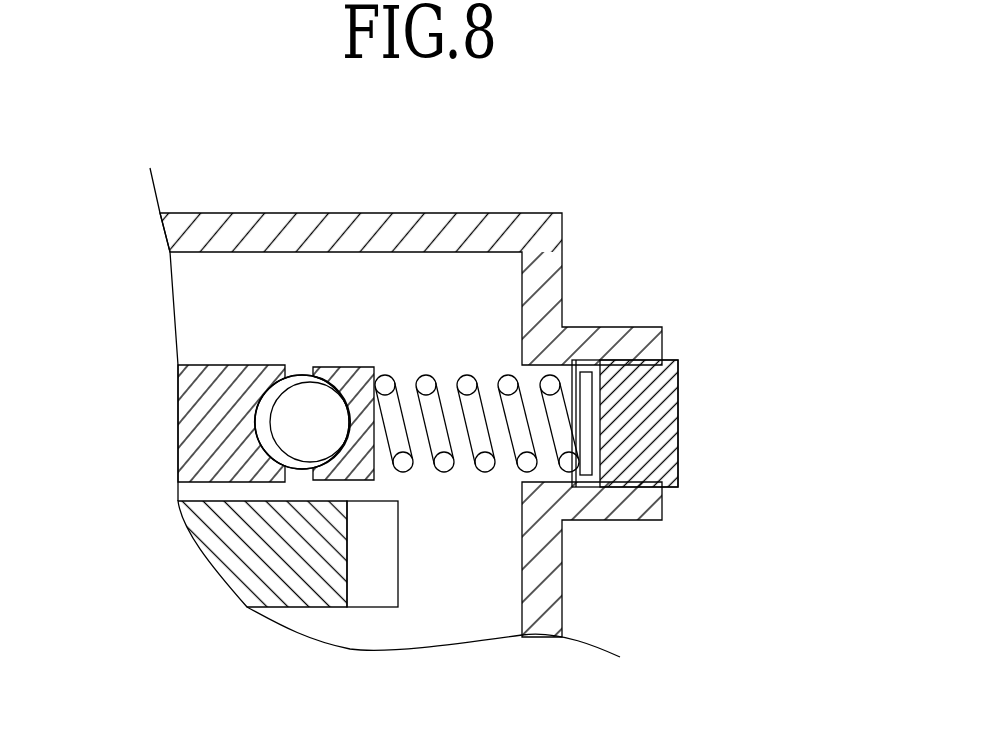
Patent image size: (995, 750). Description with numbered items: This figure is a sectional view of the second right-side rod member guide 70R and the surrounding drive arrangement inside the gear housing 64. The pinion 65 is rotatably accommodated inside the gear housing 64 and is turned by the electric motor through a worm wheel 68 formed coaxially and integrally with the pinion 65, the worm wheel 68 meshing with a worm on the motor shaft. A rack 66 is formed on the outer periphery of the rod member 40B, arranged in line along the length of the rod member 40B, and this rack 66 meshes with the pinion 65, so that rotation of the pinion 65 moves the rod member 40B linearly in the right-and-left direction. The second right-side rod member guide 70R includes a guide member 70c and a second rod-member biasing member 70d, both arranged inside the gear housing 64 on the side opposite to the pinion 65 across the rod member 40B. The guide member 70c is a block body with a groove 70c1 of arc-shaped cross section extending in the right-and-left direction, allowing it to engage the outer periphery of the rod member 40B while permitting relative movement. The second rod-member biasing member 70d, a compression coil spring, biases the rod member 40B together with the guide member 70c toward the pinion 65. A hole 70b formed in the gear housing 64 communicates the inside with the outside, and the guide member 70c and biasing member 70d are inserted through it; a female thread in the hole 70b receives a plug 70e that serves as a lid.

The rod member 40B is at (307, 382).
The gear housing 64 is at (562, 280).
The pinion 65 is at (193, 403).
The rack 66 is at (270, 430).
The worm wheel 68 is at (257, 575).
The hole 70b is at (518, 405).
The guide member 70c is at (346, 372).
The groove 70c1 is at (268, 447).
The second rod-member biasing member 70d is at (425, 382).
The plug 70e is at (678, 441).
The second right-side rod member guide 70R is at (603, 563).